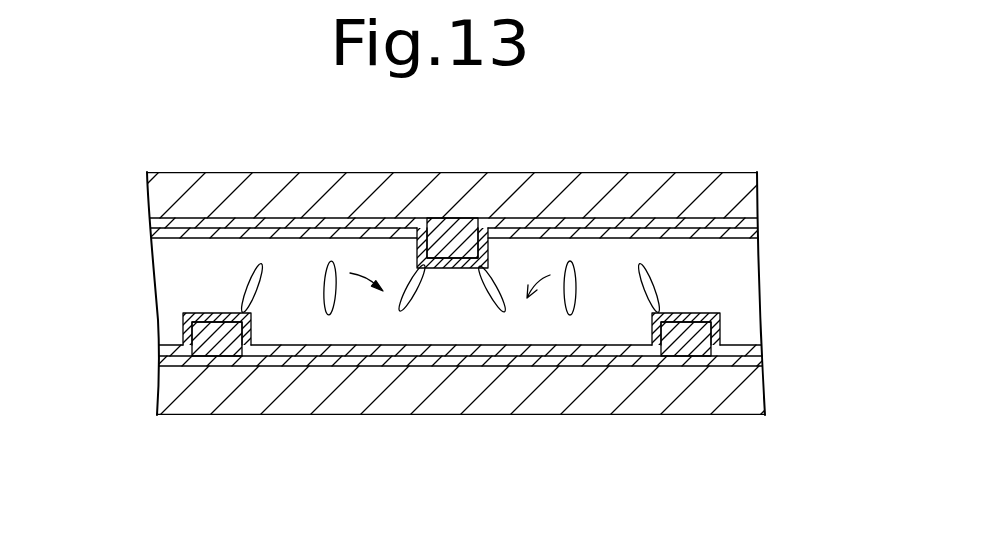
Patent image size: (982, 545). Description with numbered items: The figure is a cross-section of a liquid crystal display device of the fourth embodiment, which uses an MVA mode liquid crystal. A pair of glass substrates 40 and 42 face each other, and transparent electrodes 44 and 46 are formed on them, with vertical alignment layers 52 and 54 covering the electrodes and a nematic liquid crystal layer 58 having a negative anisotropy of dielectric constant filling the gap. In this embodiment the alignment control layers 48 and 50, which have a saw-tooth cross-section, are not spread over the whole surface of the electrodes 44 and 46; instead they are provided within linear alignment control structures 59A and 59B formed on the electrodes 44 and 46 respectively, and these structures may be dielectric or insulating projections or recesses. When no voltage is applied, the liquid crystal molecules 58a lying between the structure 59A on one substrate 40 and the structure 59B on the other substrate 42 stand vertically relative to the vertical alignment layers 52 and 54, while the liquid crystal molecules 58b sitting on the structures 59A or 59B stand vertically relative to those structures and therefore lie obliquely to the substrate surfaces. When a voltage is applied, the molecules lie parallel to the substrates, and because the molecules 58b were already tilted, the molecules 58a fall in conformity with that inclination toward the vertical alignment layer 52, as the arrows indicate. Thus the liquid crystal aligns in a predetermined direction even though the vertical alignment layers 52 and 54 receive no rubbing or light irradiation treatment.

The glass substrate 40 is at (755, 188).
The glass substrate 42 is at (753, 400).
The transparent electrode 44 is at (755, 219).
The transparent electrode 46 is at (757, 361).
The alignment control layer 48 is at (430, 208).
The alignment control layer 50 is at (204, 300).
The vertical alignment layer 52 is at (755, 231).
The vertical alignment layer 54 is at (757, 346).
The nematic liquid crystal layer 58 is at (745, 286).
The liquid crystal molecules 58a is at (332, 314).
The liquid crystal molecules 58b is at (398, 311).
The linear alignment control structure 59A is at (448, 227).
The linear alignment control structure 59B is at (215, 348).